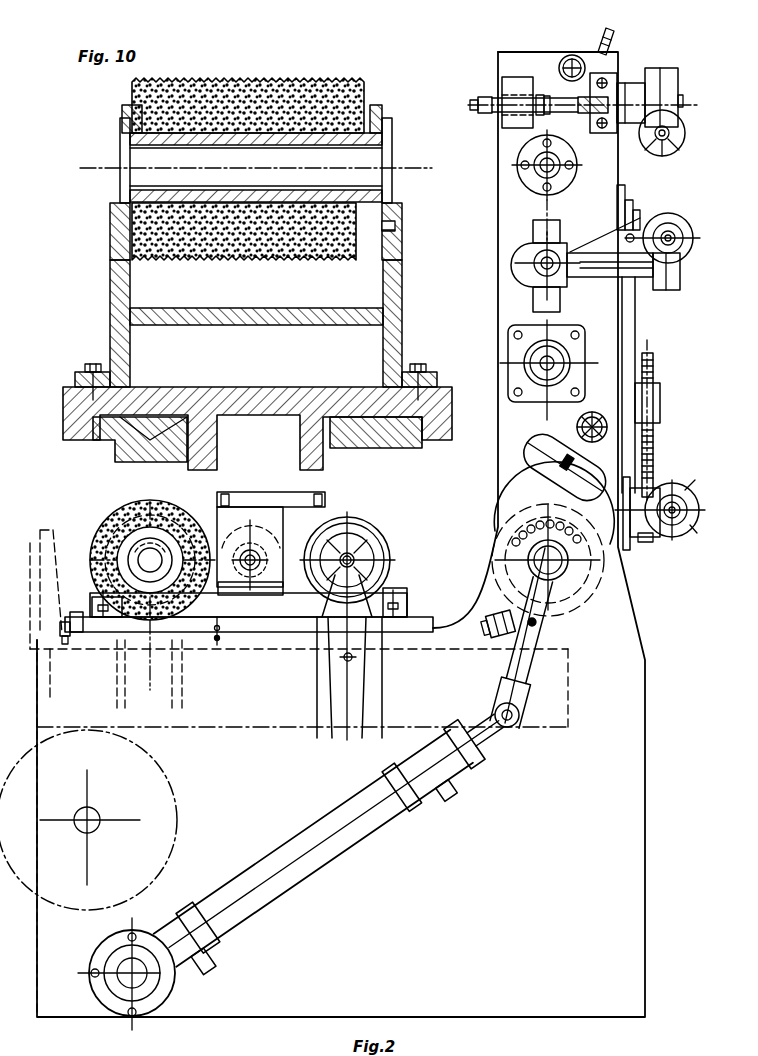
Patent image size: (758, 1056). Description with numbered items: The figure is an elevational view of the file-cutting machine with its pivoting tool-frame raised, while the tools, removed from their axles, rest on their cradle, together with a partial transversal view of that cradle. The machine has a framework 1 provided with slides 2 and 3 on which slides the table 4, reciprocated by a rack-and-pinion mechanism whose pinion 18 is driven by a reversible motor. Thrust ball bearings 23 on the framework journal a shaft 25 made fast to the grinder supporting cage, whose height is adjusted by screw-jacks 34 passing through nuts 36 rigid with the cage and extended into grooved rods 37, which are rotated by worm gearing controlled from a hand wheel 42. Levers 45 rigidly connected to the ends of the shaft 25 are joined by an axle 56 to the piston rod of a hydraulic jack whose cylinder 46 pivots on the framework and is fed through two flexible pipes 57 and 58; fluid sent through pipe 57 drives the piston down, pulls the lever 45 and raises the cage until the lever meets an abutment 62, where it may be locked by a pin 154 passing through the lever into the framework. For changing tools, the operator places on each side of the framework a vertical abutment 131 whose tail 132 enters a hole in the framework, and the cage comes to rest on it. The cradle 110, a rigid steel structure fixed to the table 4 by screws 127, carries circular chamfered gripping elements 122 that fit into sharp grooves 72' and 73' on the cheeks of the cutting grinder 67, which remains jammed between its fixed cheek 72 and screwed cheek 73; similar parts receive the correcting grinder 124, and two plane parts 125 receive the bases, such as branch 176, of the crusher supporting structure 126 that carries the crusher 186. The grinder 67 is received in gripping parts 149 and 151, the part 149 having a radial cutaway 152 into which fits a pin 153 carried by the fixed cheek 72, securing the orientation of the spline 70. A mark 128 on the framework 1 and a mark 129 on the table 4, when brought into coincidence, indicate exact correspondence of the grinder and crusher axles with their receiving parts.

In FIG. 2, the framework 1 is at (337, 534).
In FIG. 10, the slide 2 is at (370, 437).
In FIG. 10, the slide 3 is at (113, 458).
In FIG. 10, the table 4 is at (258, 330).
In FIG. 2, the table 4 is at (568, 677).
In FIG. 2, the pinion 18 is at (178, 797).
In FIG. 2, the thrust ball bearing 23 is at (583, 568).
In FIG. 2, the shaft 25 is at (572, 567).
In FIG. 2, the screw-jack 34 is at (482, 108).
In FIG. 2, the nut 36 is at (512, 82).
In FIG. 2, the grooved rod 37 is at (565, 100).
In FIG. 2, the hand wheel 42 is at (682, 120).
In FIG. 2, the lever 45 is at (517, 642).
In FIG. 2, the cylinder 46 is at (310, 873).
In FIG. 2, the axle 56 is at (520, 715).
In FIG. 2, the flexible pipe 57 is at (462, 806).
In FIG. 2, the flexible pipe 58 is at (213, 973).
In FIG. 2, the abutment 62 is at (510, 612).
In FIG. 10, the cutting grinder 67 is at (293, 102).
In FIG. 2, the cutting grinder 67 is at (163, 515).
In FIG. 10, the spline 70 is at (372, 146).
In FIG. 10, the fixed cheek 72 is at (400, 104).
In FIG. 10, the sharp groove 72' is at (413, 150).
In FIG. 10, the screwed cheek 73 is at (118, 98).
In FIG. 10, the sharp groove 73' is at (99, 143).
In FIG. 10, the cradle 110 is at (253, 312).
In FIG. 2, the cradle 110 is at (270, 605).
In FIG. 10, the circular chamfered gripping element 122 is at (122, 222).
In FIG. 2, the circular chamfered gripping element 122 is at (170, 533).
In FIG. 2, the correcting grinder 124 is at (378, 522).
In FIG. 2, the plane part 125 is at (239, 584).
In FIG. 2, the crusher supporting structure 126 is at (263, 506).
In FIG. 10, the screw 127 is at (93, 370).
In FIG. 2, the screw 127 is at (132, 602).
In FIG. 2, the identifying mark 128 is at (219, 640).
In FIG. 2, the mark 129 is at (217, 632).
In FIG. 2, the vertical abutment 131 is at (78, 612).
In FIG. 2, the tail 132 is at (60, 627).
In FIG. 10, the gripping part 149 is at (391, 283).
In FIG. 2, the gripping part 149 is at (137, 602).
In FIG. 10, the gripping part 151 is at (115, 282).
In FIG. 10, the radial cutaway 152 is at (396, 222).
In FIG. 2, the radial cutaway 152 is at (131, 552).
In FIG. 10, the pin 153 is at (396, 230).
In FIG. 2, the pin 153 is at (132, 570).
In FIG. 2, the pin 154 is at (537, 625).
In FIG. 2, the branch 176 is at (282, 545).
In FIG. 2, the crusher 186 is at (268, 568).